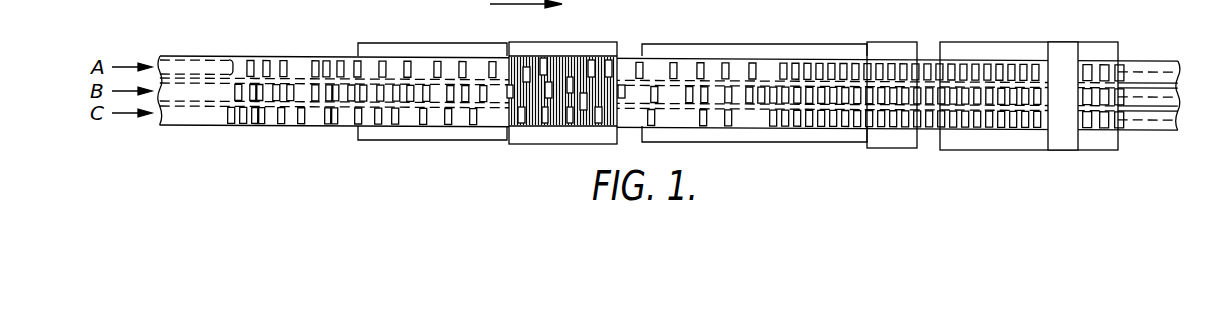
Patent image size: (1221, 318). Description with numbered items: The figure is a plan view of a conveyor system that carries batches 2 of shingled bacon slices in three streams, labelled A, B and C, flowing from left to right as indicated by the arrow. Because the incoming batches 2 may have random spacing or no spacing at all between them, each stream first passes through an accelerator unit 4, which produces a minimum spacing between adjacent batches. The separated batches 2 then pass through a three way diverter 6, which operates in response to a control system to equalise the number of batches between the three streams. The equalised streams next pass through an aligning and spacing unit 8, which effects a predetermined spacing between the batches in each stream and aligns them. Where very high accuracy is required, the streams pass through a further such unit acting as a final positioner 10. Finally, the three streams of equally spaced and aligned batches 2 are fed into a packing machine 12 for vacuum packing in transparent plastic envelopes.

The batches 2 is at (266, 59).
The accelerator unit 4 is at (435, 44).
The three way diverter 6 is at (533, 145).
The aligning and spacing unit 8 is at (773, 45).
The final positioner 10 is at (878, 149).
The packing machine 12 is at (1027, 41).